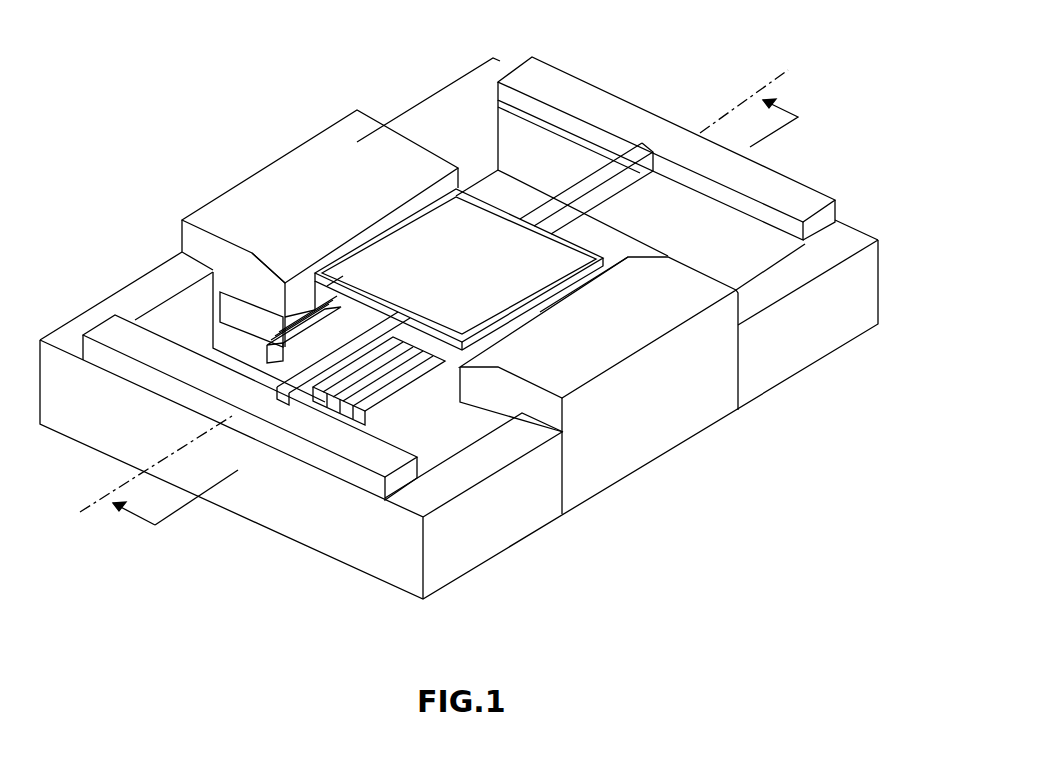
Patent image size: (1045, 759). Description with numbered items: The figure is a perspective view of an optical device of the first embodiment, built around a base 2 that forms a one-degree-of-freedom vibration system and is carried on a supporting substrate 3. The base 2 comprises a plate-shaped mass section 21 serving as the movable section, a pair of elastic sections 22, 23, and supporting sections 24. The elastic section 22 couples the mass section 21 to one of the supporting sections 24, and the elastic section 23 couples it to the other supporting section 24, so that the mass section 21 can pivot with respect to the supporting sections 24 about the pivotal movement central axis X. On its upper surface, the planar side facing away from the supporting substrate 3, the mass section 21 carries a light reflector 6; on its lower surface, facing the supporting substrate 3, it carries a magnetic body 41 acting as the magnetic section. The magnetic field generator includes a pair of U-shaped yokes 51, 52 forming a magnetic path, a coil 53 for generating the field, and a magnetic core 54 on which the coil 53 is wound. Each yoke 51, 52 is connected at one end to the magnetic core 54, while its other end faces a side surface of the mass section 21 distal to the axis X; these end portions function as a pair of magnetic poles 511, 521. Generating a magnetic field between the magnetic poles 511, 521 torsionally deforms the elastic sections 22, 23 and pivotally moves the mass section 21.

The base 2 is at (800, 173).
The supporting substrate 3 is at (882, 278).
The light reflector 6 is at (463, 217).
The mass section 21 is at (290, 278).
The elastic section 22 is at (305, 377).
The elastic section 23 is at (631, 173).
The supporting section 24 is at (545, 80).
The magnetic body 41 is at (213, 298).
The yoke 51 is at (600, 466).
The yoke 52 is at (279, 157).
The coil 53 is at (432, 392).
The magnetic core 54 is at (390, 425).
The magnetic pole 511 is at (543, 328).
The magnetic pole 521 is at (366, 209).